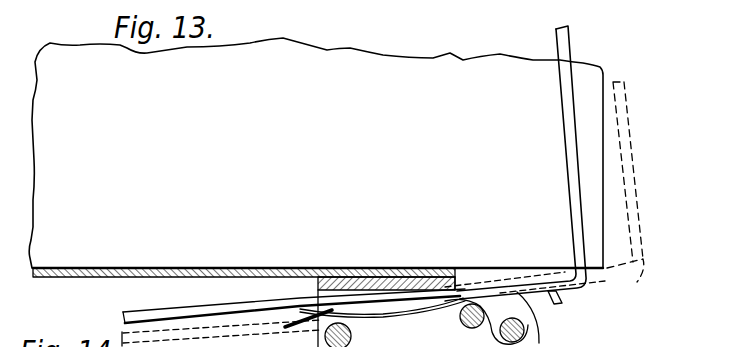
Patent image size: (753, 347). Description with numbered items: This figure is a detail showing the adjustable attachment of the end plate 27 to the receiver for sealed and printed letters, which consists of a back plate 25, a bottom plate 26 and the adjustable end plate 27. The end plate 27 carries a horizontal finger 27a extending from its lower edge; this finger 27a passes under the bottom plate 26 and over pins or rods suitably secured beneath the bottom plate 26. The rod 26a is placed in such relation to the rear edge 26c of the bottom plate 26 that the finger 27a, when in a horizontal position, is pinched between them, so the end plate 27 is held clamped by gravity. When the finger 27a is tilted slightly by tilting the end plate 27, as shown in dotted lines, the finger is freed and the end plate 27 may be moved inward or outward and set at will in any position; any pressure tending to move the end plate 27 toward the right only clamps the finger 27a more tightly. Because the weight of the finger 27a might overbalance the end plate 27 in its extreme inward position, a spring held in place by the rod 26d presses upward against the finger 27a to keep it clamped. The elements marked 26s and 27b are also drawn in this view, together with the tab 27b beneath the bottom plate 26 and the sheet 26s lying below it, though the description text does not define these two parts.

The back plate 25 is at (593, 124).
The bottom plate 26 is at (290, 268).
The rod 26a is at (470, 330).
The rear edge 26c is at (461, 283).
The rod 26d is at (528, 324).
The sheet 26s is at (397, 310).
The end plate 27 is at (564, 140).
The horizontal finger 27a is at (196, 315).
The tab 27b is at (566, 297).